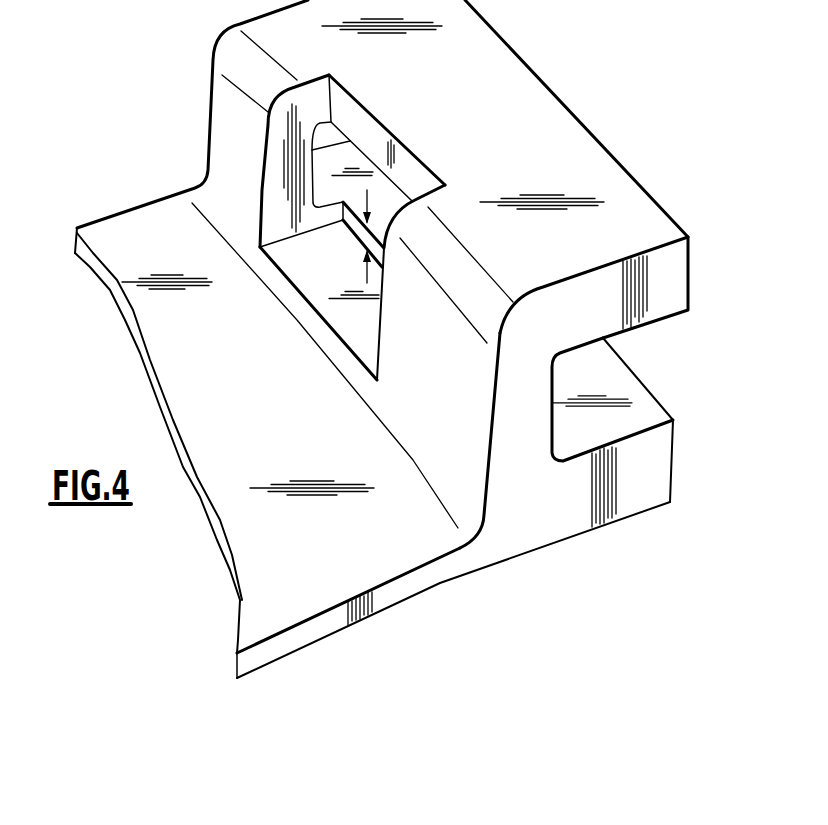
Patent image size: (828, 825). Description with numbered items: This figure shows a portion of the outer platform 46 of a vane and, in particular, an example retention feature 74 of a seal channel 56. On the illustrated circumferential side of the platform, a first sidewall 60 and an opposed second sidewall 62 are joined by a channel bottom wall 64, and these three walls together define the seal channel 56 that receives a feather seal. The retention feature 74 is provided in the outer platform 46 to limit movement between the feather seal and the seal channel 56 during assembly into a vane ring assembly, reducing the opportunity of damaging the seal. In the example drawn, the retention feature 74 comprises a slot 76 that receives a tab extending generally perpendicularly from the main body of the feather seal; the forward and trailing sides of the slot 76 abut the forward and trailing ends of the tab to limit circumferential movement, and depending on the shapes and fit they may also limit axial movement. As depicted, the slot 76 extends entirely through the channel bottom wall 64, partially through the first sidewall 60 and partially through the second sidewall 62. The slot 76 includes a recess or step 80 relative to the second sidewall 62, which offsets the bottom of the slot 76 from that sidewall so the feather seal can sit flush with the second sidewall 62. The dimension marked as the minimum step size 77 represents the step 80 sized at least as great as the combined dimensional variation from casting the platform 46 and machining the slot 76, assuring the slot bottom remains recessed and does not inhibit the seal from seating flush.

The outer platform 46 is at (148, 92).
The first sidewall 60 is at (572, 144).
The channel bottom wall 64 is at (528, 420).
The retention feature 74 is at (401, 118).
The slot 76 is at (333, 285).
The minimum step size 77 is at (370, 201).
The step 80 is at (353, 226).
The seal channel 56 is at (606, 380).
The second sidewall 62 is at (645, 413).